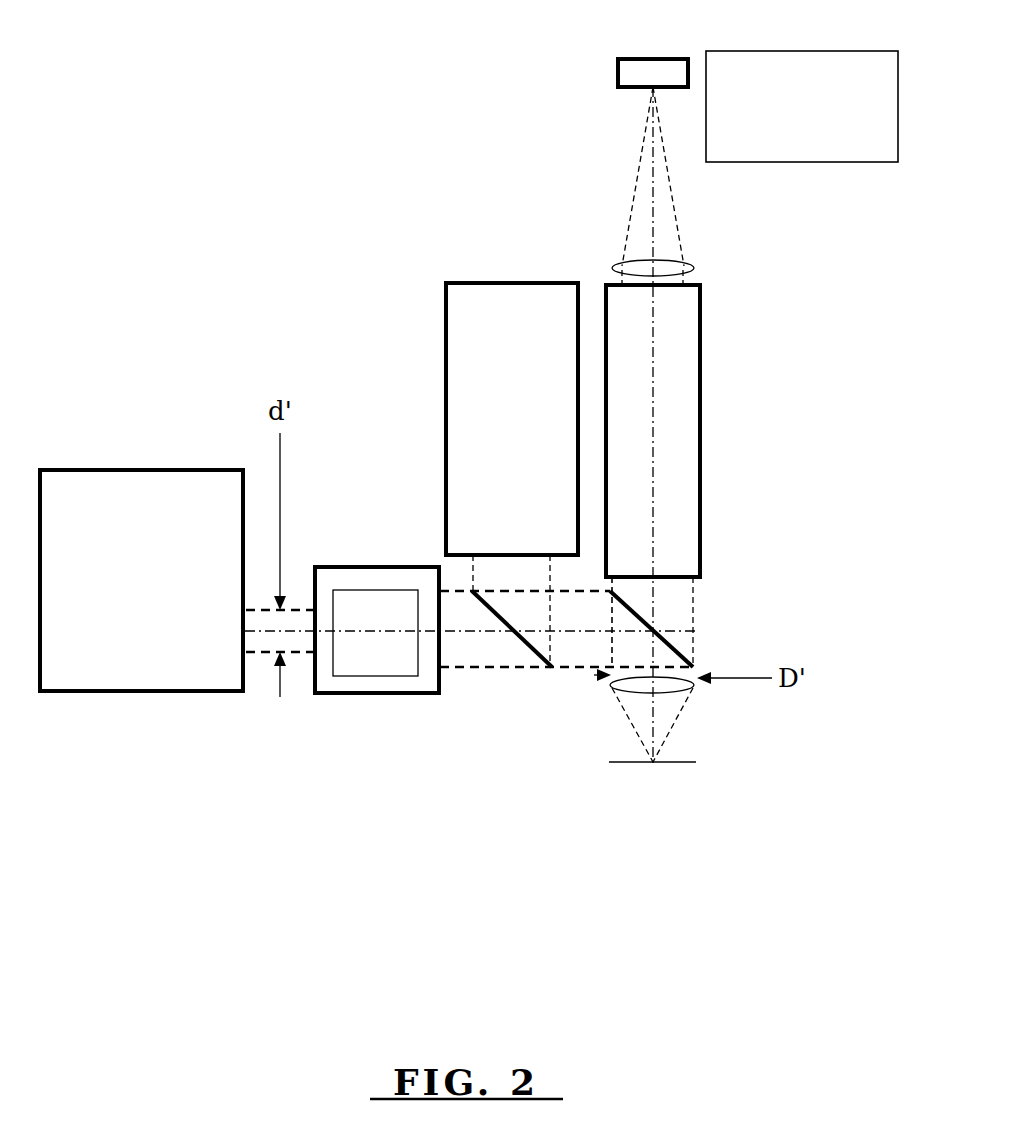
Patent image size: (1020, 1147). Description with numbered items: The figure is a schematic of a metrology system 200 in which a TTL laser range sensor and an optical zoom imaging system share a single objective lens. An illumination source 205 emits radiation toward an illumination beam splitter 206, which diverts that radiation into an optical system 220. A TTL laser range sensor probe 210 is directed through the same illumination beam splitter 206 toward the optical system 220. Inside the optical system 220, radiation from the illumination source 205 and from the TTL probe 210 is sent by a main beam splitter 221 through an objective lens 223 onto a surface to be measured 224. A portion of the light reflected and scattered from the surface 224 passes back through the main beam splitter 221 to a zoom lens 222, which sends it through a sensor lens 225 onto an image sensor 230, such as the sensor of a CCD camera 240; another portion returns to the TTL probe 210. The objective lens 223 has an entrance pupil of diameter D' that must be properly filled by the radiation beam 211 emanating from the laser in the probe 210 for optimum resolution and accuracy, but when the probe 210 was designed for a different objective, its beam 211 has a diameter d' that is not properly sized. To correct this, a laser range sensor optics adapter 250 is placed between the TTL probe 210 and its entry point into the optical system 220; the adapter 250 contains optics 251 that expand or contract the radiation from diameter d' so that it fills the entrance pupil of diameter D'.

The metrology system 200 is at (228, 238).
The illumination source 205 is at (528, 429).
The illumination beam splitter 206 is at (515, 638).
The TTL laser range sensor probe 210 is at (159, 596).
The radiation beam 211 is at (295, 654).
The optical system 220 is at (794, 303).
The main beam splitter 221 is at (663, 637).
The zoom lens 222 is at (703, 505).
The objective lens 223 is at (708, 703).
The surface to be measured 224 is at (670, 765).
The sensor lens 225 is at (625, 267).
The image sensor 230 is at (632, 68).
The CCD camera 240 is at (818, 111).
The laser range sensor optics adapter 250 is at (370, 565).
The adapter optics 251 is at (360, 672).